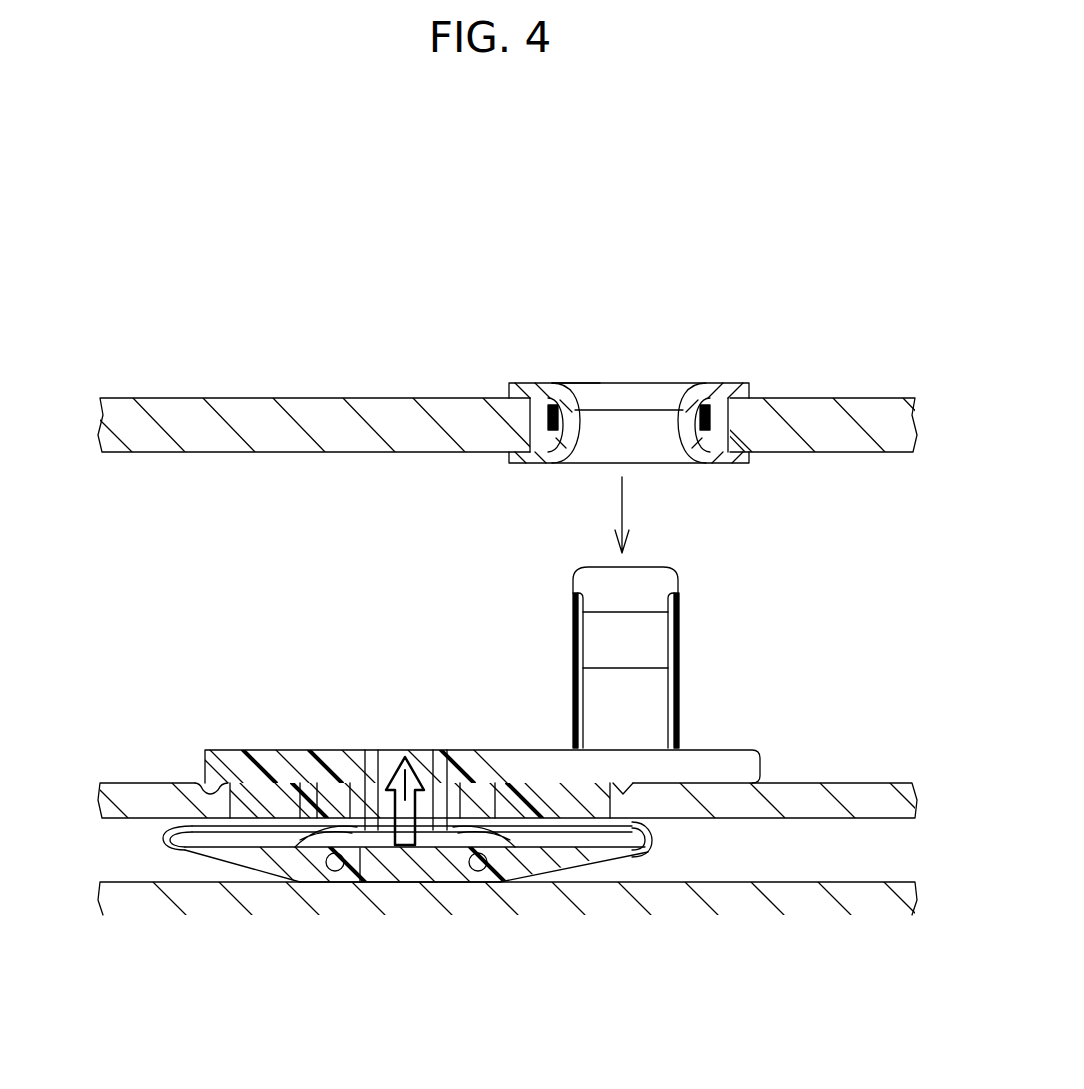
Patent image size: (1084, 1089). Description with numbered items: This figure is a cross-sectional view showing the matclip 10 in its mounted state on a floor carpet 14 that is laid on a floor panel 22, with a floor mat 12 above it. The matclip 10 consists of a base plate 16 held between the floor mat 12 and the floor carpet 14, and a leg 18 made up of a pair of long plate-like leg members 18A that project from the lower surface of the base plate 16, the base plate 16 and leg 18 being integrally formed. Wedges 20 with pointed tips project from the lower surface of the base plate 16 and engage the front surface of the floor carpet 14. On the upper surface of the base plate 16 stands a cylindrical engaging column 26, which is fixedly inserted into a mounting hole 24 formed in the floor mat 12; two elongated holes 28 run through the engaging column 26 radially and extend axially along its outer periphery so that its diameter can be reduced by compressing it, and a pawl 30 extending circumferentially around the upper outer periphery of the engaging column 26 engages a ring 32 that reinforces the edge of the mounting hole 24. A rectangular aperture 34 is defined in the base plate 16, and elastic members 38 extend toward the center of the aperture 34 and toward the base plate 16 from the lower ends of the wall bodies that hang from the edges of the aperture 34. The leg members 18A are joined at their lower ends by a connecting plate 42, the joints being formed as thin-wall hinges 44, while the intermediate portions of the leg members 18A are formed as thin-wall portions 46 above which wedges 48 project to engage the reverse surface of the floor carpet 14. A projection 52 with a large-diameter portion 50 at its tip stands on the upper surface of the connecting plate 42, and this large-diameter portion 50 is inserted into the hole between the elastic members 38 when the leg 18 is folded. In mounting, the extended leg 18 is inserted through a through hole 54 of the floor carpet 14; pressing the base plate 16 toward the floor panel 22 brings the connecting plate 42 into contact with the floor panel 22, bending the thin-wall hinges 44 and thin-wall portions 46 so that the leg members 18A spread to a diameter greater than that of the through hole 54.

The matclip 10 is at (782, 684).
The floor mat 12 is at (370, 398).
The floor carpet 14 is at (840, 783).
The base plate 16 is at (722, 750).
The leg 18 is at (624, 878).
The leg members 18A is at (300, 860).
The wedges 20 is at (208, 790).
The floor panel 22 is at (812, 882).
The mounting hole 24 is at (700, 465).
The cylindrical engaging column 26 is at (660, 578).
The elongated holes 28 is at (576, 646).
The pawl 30 is at (640, 652).
The ring 32 is at (596, 415).
The rectangular aperture 34 is at (368, 780).
The elastic members 38 is at (437, 765).
The connecting plate 42 is at (400, 868).
The thin-wall hinges 44 is at (318, 850).
The thin-wall portions 46 is at (158, 840).
The wedges 48 is at (232, 780).
The large-diameter portion 50 is at (428, 760).
The projection 52 is at (372, 853).
The through hole 54 is at (325, 776).